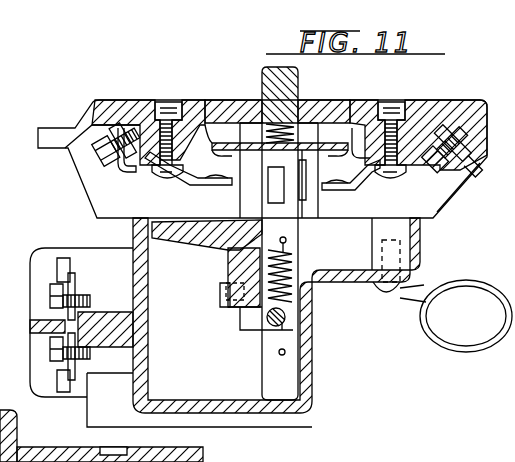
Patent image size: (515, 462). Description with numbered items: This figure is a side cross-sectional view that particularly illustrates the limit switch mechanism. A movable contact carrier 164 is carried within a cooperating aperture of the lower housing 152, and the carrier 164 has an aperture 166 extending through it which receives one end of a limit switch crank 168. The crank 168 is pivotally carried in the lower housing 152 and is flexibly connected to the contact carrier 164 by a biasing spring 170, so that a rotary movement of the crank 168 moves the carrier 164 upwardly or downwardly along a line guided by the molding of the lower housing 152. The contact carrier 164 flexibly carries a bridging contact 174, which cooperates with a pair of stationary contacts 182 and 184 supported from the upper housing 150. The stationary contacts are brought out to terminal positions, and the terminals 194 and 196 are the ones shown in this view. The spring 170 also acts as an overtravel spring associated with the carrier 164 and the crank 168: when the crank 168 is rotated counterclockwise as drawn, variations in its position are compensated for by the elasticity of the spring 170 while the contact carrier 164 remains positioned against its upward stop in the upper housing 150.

The upper housing 150 is at (230, 92).
The lower housing 152 is at (305, 340).
The contact carrier 164 is at (298, 260).
The aperture 166 is at (287, 223).
The limit switch crank 168 is at (200, 243).
The biasing spring 170 is at (303, 302).
The bridging contact 174 is at (244, 139).
The stationary contact 182 is at (197, 188).
The stationary contact 184 is at (349, 190).
The terminal 194 is at (95, 157).
The terminal 196 is at (445, 166).